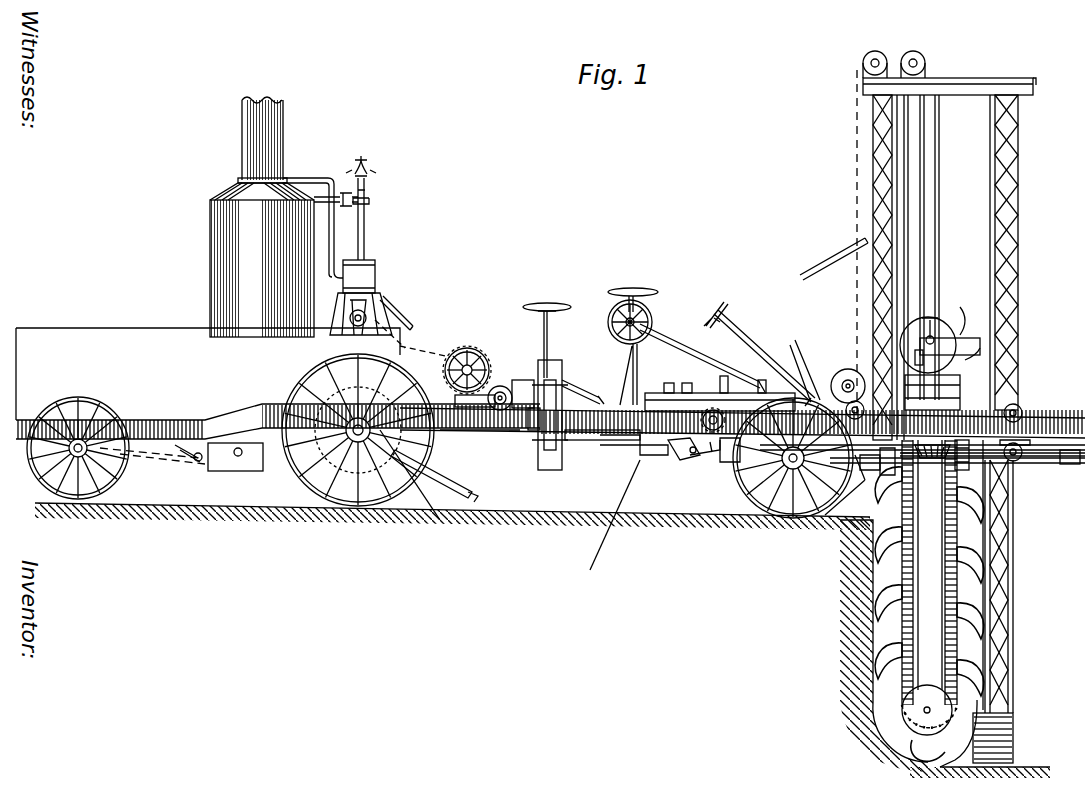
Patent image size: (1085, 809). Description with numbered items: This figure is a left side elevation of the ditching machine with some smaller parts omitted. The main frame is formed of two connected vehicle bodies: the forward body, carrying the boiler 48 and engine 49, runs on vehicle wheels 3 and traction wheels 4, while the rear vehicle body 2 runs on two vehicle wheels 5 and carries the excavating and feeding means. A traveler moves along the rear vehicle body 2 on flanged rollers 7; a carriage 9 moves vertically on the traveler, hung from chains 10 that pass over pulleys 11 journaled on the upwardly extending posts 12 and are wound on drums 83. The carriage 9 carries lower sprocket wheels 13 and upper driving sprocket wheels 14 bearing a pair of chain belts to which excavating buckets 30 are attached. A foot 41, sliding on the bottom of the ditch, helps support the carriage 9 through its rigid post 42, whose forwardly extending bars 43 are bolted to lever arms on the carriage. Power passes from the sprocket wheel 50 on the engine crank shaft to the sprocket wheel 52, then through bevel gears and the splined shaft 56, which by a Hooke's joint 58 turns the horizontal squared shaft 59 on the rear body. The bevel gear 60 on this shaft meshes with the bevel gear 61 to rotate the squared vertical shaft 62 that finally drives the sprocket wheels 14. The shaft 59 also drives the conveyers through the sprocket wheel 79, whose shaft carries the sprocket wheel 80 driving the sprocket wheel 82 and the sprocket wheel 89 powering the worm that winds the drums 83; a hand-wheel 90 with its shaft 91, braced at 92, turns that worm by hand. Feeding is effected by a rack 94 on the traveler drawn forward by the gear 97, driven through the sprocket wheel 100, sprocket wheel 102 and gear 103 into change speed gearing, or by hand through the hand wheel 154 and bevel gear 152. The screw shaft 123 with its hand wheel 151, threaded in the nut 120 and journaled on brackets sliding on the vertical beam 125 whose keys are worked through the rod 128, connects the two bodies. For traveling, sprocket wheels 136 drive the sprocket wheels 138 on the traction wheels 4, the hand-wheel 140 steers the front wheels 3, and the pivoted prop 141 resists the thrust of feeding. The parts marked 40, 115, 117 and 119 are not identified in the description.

The rear vehicle body 2 is at (992, 439).
The vehicle wheels 3 is at (80, 448).
The traction wheels 4 is at (312, 485).
The vehicle wheels 5 is at (760, 470).
The flanged rollers 7 is at (795, 470).
The carriage 9 is at (945, 575).
The chains 10 is at (895, 55).
The pulleys 11 is at (874, 50).
The posts 12 is at (875, 130).
The sprocket wheels 13 is at (905, 712).
The driving sprocket wheels 14 is at (940, 320).
The excavating buckets 30 is at (975, 400).
The lower bucket 40 is at (935, 749).
The foot 41 is at (1015, 725).
The post 42 is at (1014, 617).
The forwardly extending bars 43 is at (962, 335).
The boiler 48 is at (240, 268).
The engine 49 is at (366, 262).
The sprocket wheel 50 is at (400, 345).
The sprocket wheel 52 is at (483, 350).
The shaft 56 is at (590, 380).
The Hooke's joint 58 is at (607, 529).
The horizontal squared shaft 59 is at (1065, 465).
The bevel gear 60 is at (957, 470).
The bevel gear 61 is at (932, 458).
The squared vertical shaft 62 is at (940, 225).
The sprocket wheel 79 is at (885, 478).
The sprocket wheel 80 is at (1012, 500).
The sprocket wheel 82 is at (1015, 434).
The drums 83 is at (846, 368).
The sprocket wheel 89 is at (866, 470).
The hand-wheel 90 is at (722, 318).
The shaft 91 is at (766, 352).
The brace 92 is at (803, 275).
The rack 94 is at (660, 455).
The gear 97 is at (705, 455).
The sprocket wheel 100 is at (705, 420).
The sprocket wheel 102 is at (728, 375).
The gear 103 is at (672, 381).
The pinion 115 is at (760, 470).
The rod 117 is at (790, 352).
The steering rod 119 is at (690, 350).
The nut 120 is at (533, 422).
The screw shaft 123 is at (512, 432).
The vertical beam 125 is at (625, 443).
The rod 128 is at (545, 470).
The sprocket wheels 136 is at (508, 388).
The sprocket wheels 138 is at (425, 513).
The hand-wheel 140 is at (392, 297).
The prop or anchor 141 is at (450, 478).
The hand wheel 151 is at (548, 303).
The bevel gear 152 is at (640, 448).
The hand wheel 154 is at (655, 280).